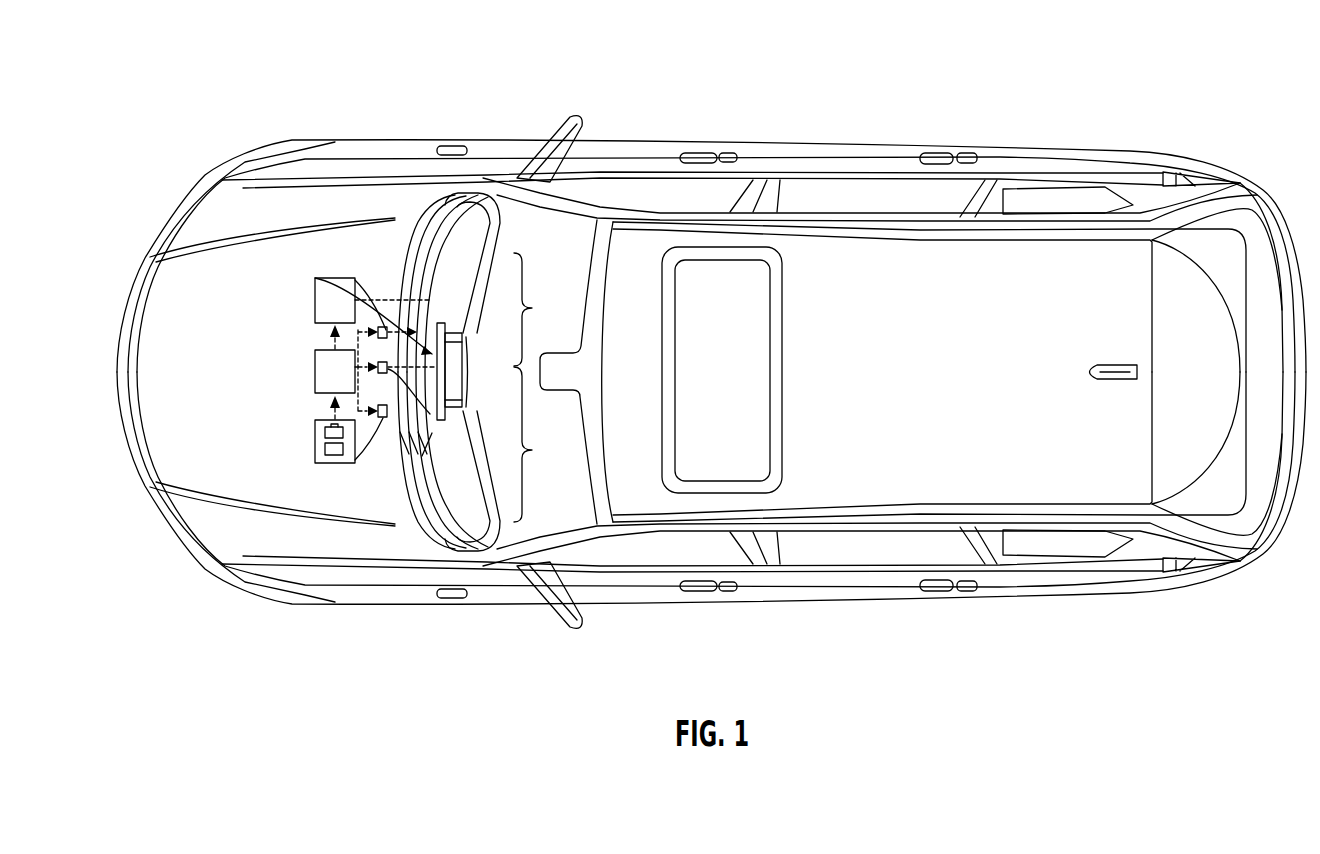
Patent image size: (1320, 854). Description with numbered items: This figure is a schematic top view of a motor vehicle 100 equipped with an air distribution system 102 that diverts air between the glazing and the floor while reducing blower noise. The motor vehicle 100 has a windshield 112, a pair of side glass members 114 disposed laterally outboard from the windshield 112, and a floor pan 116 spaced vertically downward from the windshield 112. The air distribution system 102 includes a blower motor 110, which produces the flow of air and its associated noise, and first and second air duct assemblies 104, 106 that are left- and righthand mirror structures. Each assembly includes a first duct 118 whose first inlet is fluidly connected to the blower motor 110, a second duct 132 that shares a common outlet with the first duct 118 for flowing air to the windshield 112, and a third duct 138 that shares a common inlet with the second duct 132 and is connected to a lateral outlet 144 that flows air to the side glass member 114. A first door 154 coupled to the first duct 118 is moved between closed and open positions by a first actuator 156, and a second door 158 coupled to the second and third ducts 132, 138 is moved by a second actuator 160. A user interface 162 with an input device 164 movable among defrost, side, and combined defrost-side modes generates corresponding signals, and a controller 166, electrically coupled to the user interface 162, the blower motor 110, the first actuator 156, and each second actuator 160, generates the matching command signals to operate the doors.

The motor vehicle 100 is at (176, 75).
The air distribution system 102 is at (243, 338).
The first air duct assembly 104 is at (546, 309).
The second air duct assembly 106 is at (546, 444).
The blower motor 110 is at (313, 302).
The windshield 112 is at (578, 213).
The side glass member 114 is at (538, 181).
The floor pan 116 is at (578, 509).
The first duct 118 is at (463, 360).
The second duct 132 is at (464, 338).
The third duct 138 is at (470, 292).
The lateral outlet 144 is at (483, 180).
The first door 154 is at (315, 283).
The first actuator 156 is at (403, 380).
The second door 158 is at (430, 268).
The second actuator 160 is at (362, 286).
The user interface 162 is at (315, 457).
The input device 164 is at (325, 447).
The controller 166 is at (313, 366).